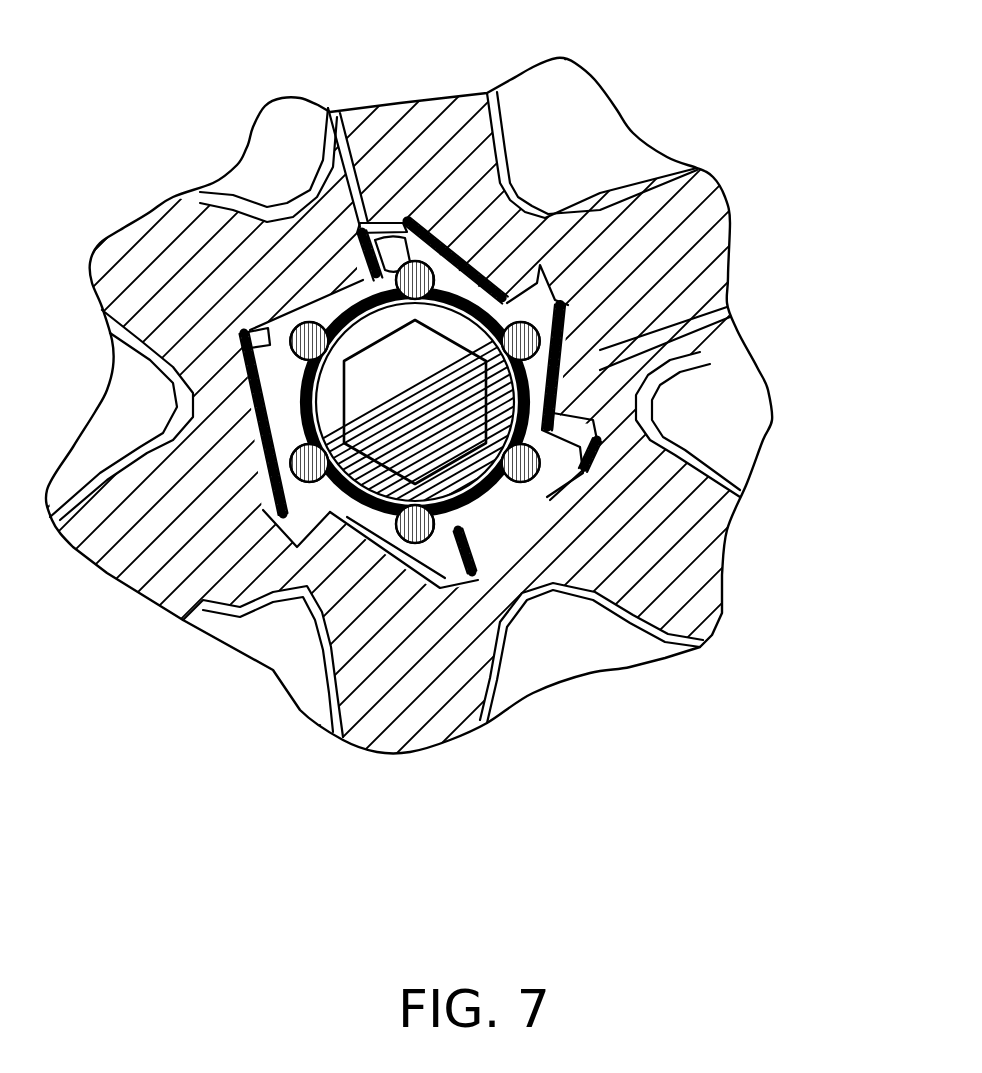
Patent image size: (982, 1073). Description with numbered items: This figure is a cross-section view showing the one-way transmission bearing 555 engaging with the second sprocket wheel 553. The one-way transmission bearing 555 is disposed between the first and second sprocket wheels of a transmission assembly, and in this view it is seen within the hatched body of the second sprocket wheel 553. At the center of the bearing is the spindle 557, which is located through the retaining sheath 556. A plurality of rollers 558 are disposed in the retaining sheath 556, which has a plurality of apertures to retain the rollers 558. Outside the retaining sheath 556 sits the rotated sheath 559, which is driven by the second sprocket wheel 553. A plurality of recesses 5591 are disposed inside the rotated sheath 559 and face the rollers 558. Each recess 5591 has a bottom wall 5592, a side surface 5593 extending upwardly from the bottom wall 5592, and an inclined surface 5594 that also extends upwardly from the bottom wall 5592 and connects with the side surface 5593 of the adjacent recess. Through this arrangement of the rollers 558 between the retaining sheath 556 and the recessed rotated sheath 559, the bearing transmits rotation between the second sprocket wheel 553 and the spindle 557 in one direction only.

The second sprocket wheel 553 is at (662, 555).
The one-way transmission bearing 555 is at (368, 219).
The retaining sheath 556 is at (555, 200).
The spindle 557 is at (562, 362).
The rollers 558 is at (730, 203).
The rotated sheath 559 is at (497, 400).
The recesses 5591 is at (355, 230).
The bottom wall 5592 is at (410, 250).
The side surface 5593 is at (108, 566).
The inclined surface 5594 is at (262, 330).